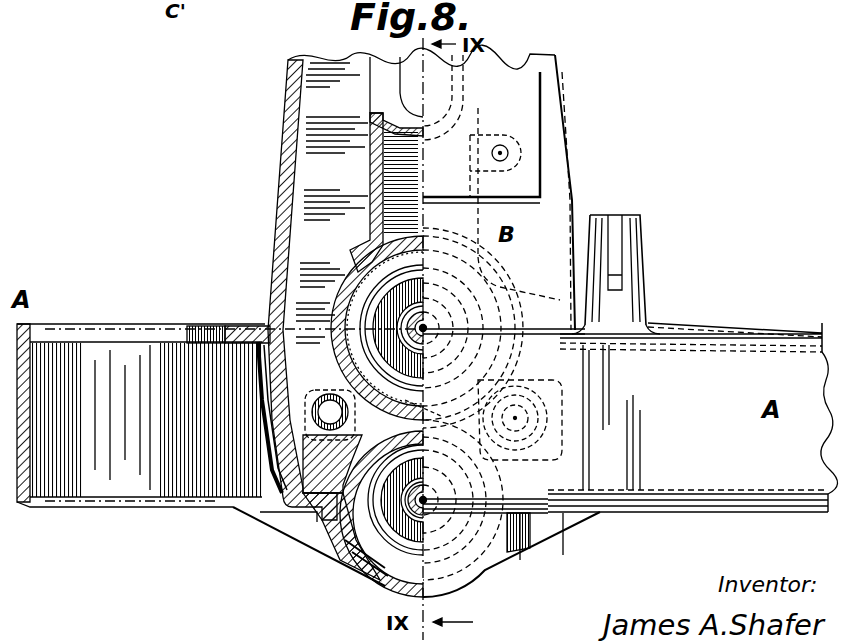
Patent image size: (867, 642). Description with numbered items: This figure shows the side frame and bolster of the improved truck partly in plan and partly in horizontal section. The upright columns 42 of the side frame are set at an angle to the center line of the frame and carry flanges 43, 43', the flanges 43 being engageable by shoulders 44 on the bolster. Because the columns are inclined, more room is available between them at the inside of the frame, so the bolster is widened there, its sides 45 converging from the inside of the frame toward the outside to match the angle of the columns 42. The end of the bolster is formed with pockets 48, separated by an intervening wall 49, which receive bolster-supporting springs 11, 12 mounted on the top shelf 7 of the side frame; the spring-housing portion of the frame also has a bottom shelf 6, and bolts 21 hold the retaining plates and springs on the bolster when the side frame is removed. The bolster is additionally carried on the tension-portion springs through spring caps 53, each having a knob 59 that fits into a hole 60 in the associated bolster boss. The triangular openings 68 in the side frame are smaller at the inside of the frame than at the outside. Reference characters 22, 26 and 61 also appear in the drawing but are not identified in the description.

The part shown in adjacent figure 6 is at (237, 11).
The part shown in adjacent figure 61 is at (556, 8).
The housing wall 7 is at (266, 326).
The housing bottom 11 is at (373, 565).
The stem boss 12 is at (407, 267).
The gear housing wall 48 is at (360, 268).
The boss 59 is at (331, 394).
The gear 21 is at (427, 312).
The gear mesh 49 is at (428, 409).
The pinion 60 is at (541, 413).
The flange line 45 is at (262, 385).
The cup wall 42 is at (262, 413).
The cup rim 53 is at (262, 438).
The tube 68 is at (97, 328).
The cup end wall 22 is at (23, 506).
The flange 43' is at (217, 315).
The flange 43 is at (544, 539).
The bolt 44 is at (330, 514).
The spigot 26 is at (637, 248).